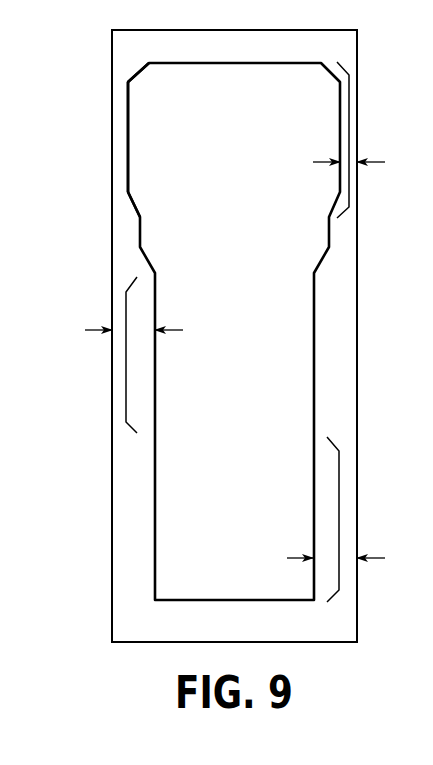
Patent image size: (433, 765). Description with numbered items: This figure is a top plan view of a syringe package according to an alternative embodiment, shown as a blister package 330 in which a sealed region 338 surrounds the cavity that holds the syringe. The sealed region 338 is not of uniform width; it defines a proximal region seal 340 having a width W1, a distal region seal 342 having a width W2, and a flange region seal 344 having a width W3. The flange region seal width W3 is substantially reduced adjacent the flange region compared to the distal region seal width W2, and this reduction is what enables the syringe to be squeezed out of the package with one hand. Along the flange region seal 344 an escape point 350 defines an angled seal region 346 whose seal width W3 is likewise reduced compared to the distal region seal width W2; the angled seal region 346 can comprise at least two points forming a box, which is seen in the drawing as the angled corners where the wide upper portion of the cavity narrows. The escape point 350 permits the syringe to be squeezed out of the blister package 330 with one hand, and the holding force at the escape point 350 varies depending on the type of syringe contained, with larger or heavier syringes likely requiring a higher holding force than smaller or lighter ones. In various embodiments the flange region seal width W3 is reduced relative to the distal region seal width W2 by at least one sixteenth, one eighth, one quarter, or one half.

The blister package 330 is at (72, 278).
The sealed region 338 is at (162, 600).
The proximal region seal 340 is at (125, 360).
The distal region seal 342 is at (337, 512).
The flange region seal 344 is at (350, 133).
The angled seal region 346 is at (128, 82).
The escape point 350 is at (128, 140).
The width of proximal region seal W1 is at (153, 330).
The width of distal region seal W2 is at (354, 558).
The width of flange region seal W3 is at (329, 163).